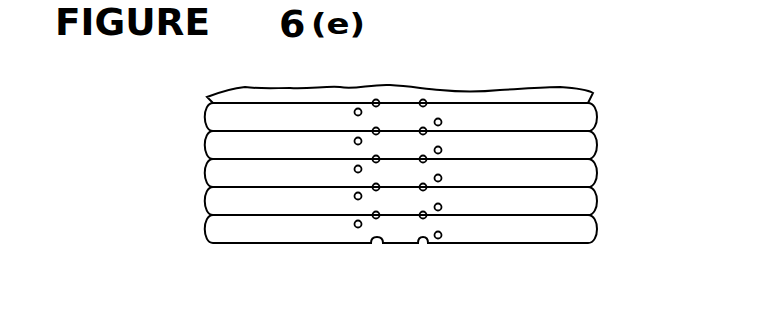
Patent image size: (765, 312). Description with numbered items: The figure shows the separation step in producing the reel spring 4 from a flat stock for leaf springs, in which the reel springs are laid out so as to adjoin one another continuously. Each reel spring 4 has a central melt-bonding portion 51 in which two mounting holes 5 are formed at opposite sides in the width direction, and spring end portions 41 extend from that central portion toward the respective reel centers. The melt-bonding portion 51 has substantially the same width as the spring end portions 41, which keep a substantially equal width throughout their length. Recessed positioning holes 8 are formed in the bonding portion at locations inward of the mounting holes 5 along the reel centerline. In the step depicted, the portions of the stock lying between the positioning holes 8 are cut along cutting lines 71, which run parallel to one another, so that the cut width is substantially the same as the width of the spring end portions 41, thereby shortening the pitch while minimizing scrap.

The reel spring 4 is at (577, 84).
The spring end portions 41 is at (223, 174).
The mounting holes 5 is at (448, 146).
The melt-bonding portion 51 is at (391, 97).
The cutting lines 71 is at (403, 120).
The positioning holes 8 is at (372, 130).